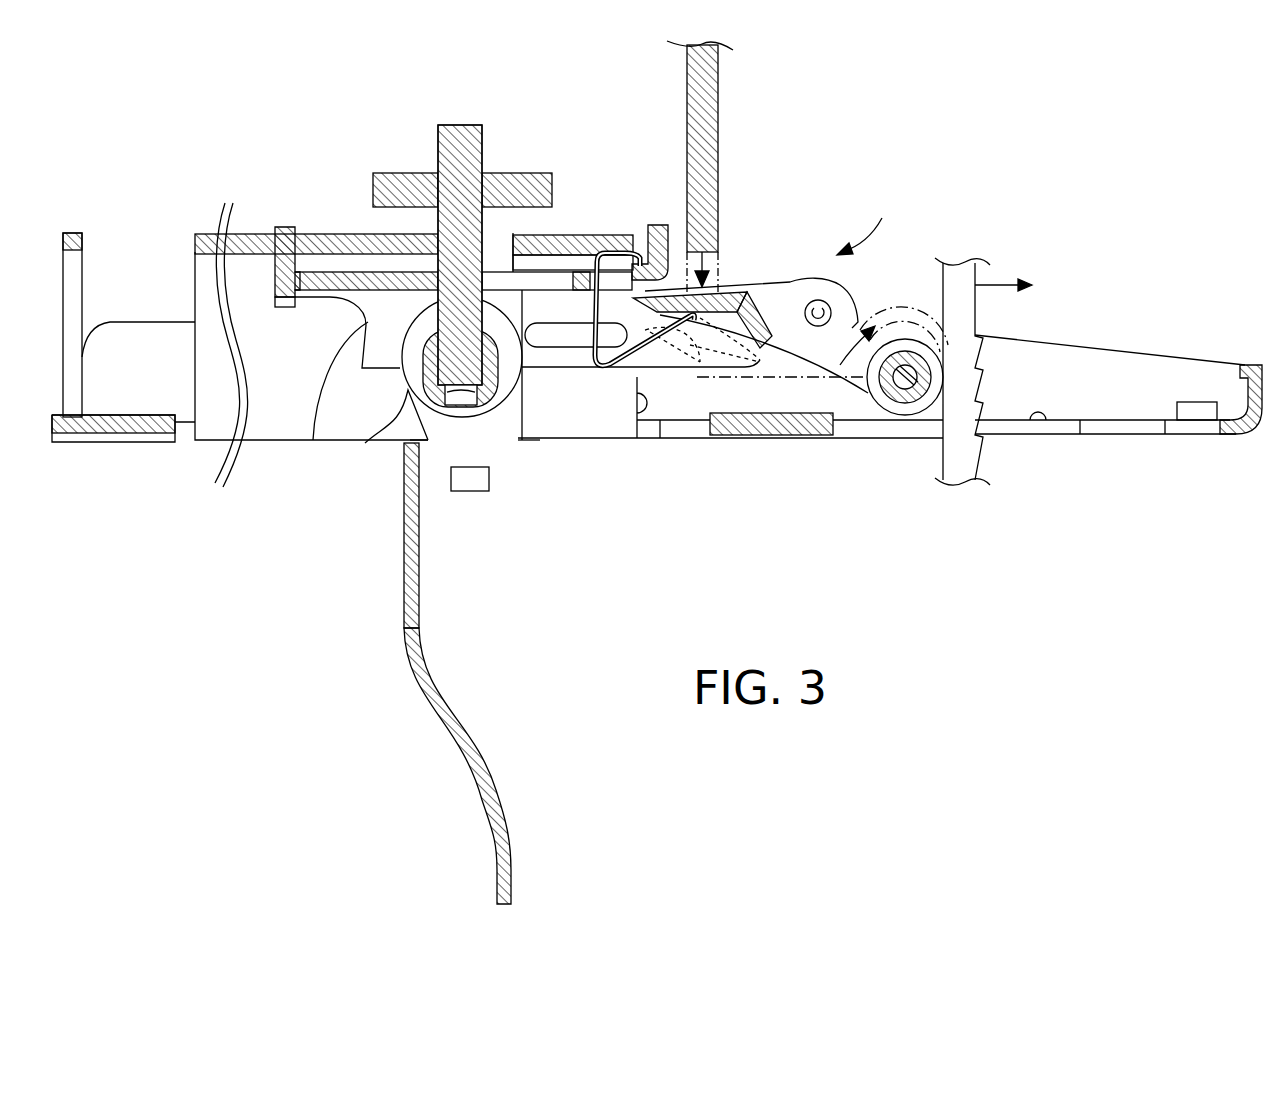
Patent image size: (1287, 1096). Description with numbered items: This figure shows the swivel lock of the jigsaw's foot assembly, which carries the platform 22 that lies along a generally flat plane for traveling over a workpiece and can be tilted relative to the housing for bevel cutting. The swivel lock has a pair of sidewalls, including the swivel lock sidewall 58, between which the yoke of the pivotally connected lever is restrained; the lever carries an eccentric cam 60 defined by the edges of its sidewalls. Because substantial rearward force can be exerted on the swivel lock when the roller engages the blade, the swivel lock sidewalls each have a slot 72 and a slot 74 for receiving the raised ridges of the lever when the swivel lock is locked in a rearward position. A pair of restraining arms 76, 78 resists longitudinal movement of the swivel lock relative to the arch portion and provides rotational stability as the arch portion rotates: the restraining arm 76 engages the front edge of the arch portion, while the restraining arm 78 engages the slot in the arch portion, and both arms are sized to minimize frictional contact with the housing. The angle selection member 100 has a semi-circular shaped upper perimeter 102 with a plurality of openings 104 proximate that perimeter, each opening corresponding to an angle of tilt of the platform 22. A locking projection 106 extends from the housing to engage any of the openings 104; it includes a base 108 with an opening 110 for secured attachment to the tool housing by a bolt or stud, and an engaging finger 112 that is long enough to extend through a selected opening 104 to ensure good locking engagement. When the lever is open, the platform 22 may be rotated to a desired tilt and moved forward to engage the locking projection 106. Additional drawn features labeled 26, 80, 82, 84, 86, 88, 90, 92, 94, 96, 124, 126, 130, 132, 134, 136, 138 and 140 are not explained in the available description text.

The platform 22 is at (1093, 363).
The rack 26 is at (957, 265).
The swivel lock sidewall 58 is at (707, 78).
The eccentric cam 60 is at (716, 221).
The slot 72 is at (1038, 420).
The slot 74 is at (1213, 373).
The restraining arm 76 is at (328, 244).
The restraining arm 78 is at (250, 280).
The carriage bottom surface 80 is at (1000, 427).
The pawl assembly 82 is at (867, 219).
The housing bottom edge 84 is at (940, 443).
The housing cavity 86 is at (331, 300).
The mounting band 88 is at (365, 233).
The clamp 90 is at (288, 226).
The clamp tab 92 is at (290, 307).
The spring 94 is at (640, 447).
The pawl 96 is at (763, 283).
The angle selection member 100 is at (830, 312).
The upper perimeter 102 is at (793, 347).
The openings 104 is at (817, 326).
The locking projection 106 is at (623, 330).
The base 108 is at (700, 377).
The opening 110 is at (597, 347).
The engaging finger 112 is at (870, 380).
The bolt 124 is at (459, 124).
The cross plate 126 is at (532, 172).
The strip 130 is at (404, 628).
The curved strip portion 132 is at (453, 733).
The hook 134 is at (455, 440).
The box 136 is at (517, 447).
The washer 138 is at (367, 440).
The finger 140 is at (313, 440).